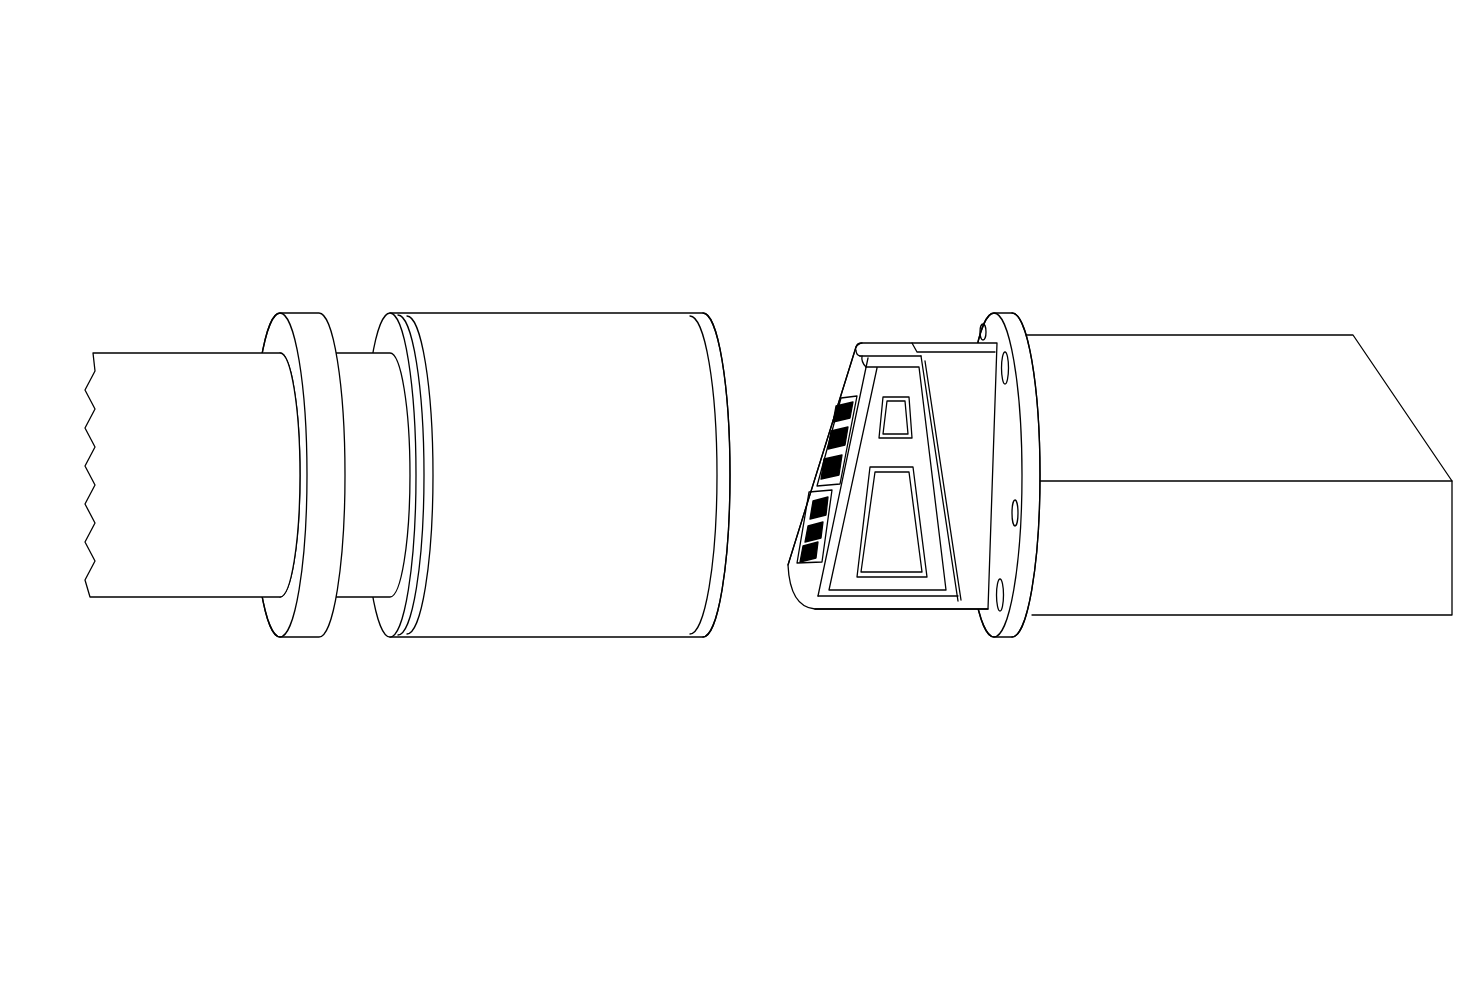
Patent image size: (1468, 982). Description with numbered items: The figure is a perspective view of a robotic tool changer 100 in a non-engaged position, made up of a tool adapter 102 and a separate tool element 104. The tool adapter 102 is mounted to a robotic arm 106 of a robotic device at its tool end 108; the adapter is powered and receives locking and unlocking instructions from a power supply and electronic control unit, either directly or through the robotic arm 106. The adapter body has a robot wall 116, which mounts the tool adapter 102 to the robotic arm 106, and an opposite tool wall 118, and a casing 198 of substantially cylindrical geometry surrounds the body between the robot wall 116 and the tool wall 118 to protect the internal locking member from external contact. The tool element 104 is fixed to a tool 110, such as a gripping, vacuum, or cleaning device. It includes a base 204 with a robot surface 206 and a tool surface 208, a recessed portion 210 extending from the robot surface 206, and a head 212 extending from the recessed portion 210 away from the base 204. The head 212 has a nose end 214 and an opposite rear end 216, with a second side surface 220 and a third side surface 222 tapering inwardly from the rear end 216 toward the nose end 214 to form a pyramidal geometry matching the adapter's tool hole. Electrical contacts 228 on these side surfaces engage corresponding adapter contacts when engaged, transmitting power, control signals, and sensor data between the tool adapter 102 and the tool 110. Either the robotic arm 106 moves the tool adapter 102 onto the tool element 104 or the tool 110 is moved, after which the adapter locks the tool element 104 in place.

The robotic tool changer 100 is at (205, 147).
The tool adapter 102 is at (583, 290).
The tool element 104 is at (835, 330).
The robotic arm 106 is at (155, 331).
The tool end 108 is at (272, 333).
The tool 110 is at (1292, 360).
The robot wall 116 is at (387, 333).
The tool wall 118 is at (718, 345).
The casing 198 is at (490, 326).
The base 204 is at (1005, 307).
The robot surface 206 is at (973, 332).
The tool surface 208 is at (1040, 420).
The recessed portion 210 is at (983, 504).
The head 212 is at (877, 612).
The nose end 214 is at (876, 350).
The rear end 216 is at (910, 614).
The second side surface 220 is at (800, 574).
The third side surface 222 is at (883, 383).
The electrical contacts 228 is at (822, 484).